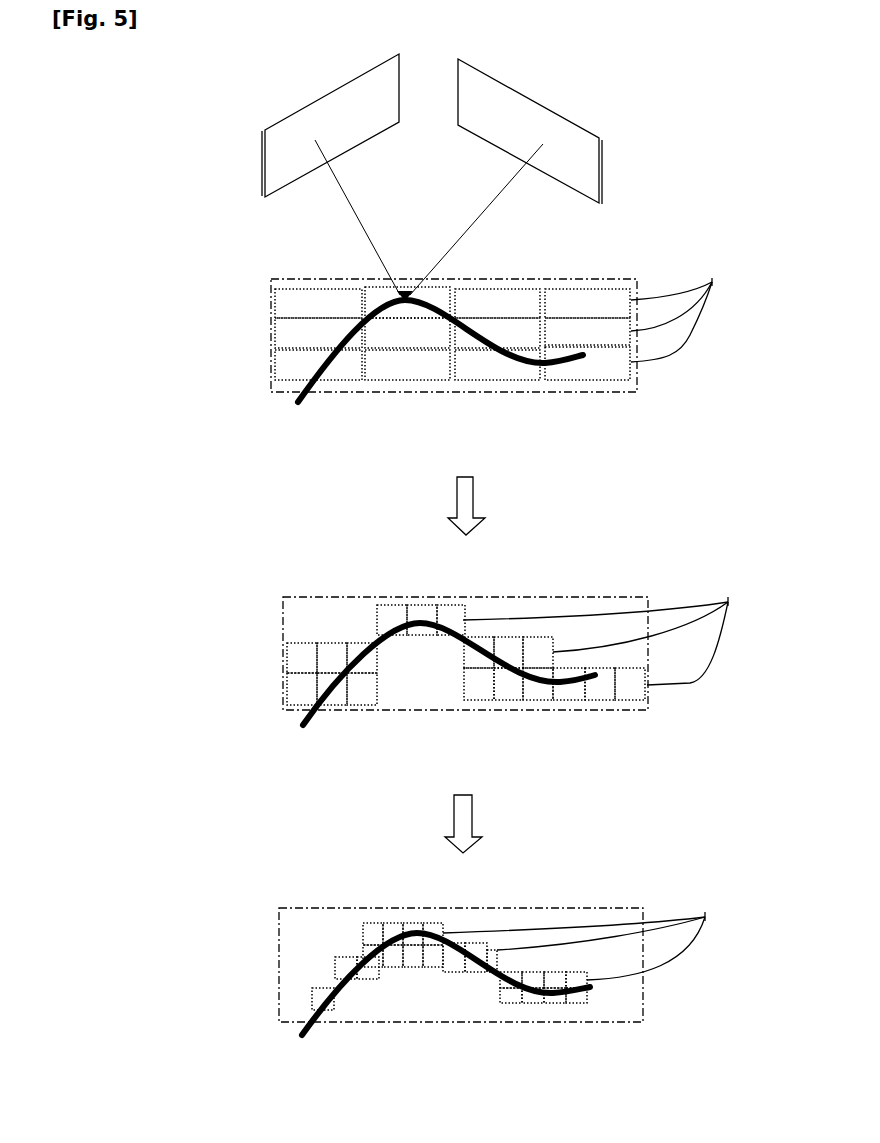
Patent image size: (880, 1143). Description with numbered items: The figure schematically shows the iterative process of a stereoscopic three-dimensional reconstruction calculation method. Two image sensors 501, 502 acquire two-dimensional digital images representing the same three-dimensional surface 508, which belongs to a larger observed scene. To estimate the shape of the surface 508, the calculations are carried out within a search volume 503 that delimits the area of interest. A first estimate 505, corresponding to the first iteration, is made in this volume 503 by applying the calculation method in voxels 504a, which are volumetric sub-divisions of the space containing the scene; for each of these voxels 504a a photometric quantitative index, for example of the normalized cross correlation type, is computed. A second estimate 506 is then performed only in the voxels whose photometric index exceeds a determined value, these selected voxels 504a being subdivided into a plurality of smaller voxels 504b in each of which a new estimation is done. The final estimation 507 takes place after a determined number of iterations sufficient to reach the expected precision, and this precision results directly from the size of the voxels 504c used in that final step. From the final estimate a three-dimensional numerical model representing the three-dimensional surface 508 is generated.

The image sensor 501 is at (264, 164).
The image sensor 502 is at (602, 167).
The search volume 503 is at (603, 279).
The voxels 504a is at (688, 307).
The smaller voxels 504b is at (613, 629).
The voxels 504c is at (591, 934).
The first estimate 505 is at (151, 336).
The second estimate 506 is at (156, 643).
The final estimation 507 is at (171, 977).
The three-dimensional surface 508 is at (290, 403).